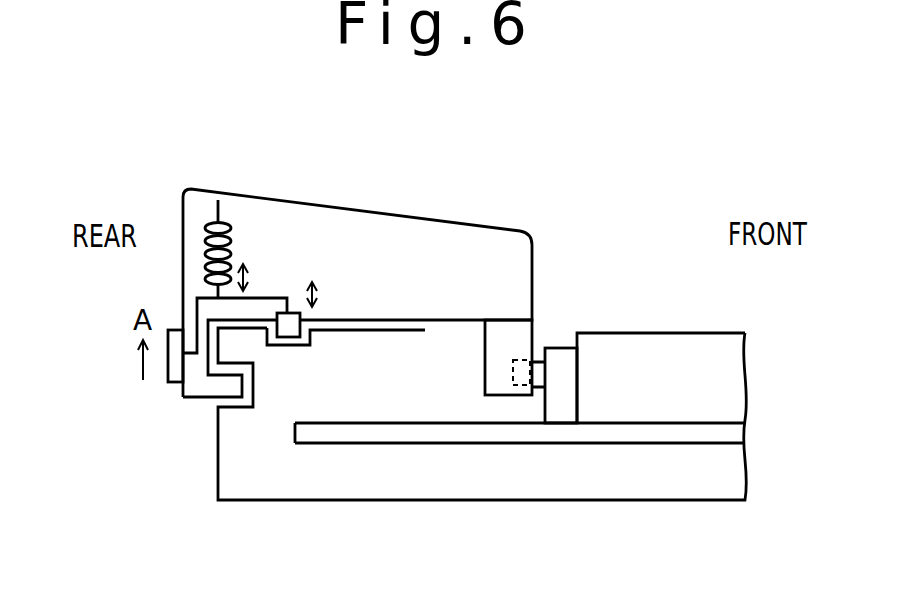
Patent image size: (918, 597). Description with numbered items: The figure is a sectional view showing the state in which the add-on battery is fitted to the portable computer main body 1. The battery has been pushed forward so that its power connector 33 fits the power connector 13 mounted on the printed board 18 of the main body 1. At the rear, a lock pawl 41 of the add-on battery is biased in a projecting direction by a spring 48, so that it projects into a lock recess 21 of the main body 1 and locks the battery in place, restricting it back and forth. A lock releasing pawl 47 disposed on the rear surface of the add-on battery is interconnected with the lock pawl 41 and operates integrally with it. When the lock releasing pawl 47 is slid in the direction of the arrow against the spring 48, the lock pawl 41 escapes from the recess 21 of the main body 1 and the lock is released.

The portable computer main body 1 is at (638, 502).
The power connector 13 is at (566, 362).
The printed board 18 is at (697, 423).
The lock recess 21 is at (310, 320).
The power connector 33 is at (500, 386).
The lock pawl 41 is at (289, 340).
The lock releasing pawl 47 is at (168, 366).
The spring 48 is at (228, 233).